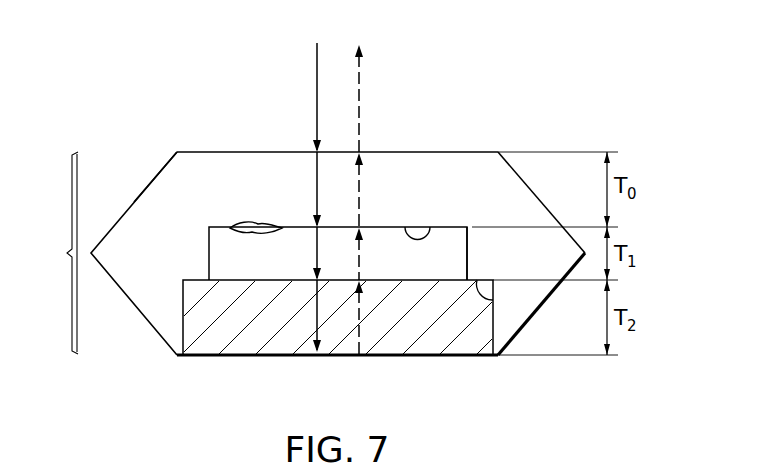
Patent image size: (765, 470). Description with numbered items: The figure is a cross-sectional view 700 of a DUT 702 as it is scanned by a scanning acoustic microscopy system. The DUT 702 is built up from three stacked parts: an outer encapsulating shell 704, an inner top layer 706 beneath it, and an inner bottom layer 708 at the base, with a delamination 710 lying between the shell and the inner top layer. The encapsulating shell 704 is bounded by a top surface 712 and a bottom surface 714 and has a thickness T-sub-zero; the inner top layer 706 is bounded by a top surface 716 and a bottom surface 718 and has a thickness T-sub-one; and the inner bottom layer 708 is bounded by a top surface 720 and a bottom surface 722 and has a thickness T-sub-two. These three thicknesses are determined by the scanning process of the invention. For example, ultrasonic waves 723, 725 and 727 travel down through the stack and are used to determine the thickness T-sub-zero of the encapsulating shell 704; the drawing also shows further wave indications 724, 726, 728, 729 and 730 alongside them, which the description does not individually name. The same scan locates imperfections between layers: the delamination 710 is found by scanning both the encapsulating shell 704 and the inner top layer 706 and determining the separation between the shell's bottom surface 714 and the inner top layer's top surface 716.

The cross-sectional view 700 is at (483, 88).
The DUT 702 is at (48, 253).
The encapsulating shell 704 is at (164, 152).
The inner top layer 706 is at (209, 262).
The inner bottom layer 708 is at (214, 348).
The delamination 710 is at (230, 228).
The top surface 712 is at (220, 152).
The bottom surface 714 is at (430, 226).
The top surface 716 is at (455, 226).
The bottom surface 718 is at (494, 305).
The top surface 720 is at (490, 279).
The bottom surface 722 is at (444, 357).
The ultrasonic wave 723 is at (317, 88).
The reflected beam 724 is at (360, 85).
The ultrasonic wave 725 is at (317, 162).
The reflected beam segment in upper portion 726 is at (362, 185).
The ultrasonic wave 727 is at (317, 233).
The reflected beam segment in intermediate layer 728 is at (362, 258).
The incident beam segment in substrate 729 is at (317, 306).
The reflected beam segment in substrate 730 is at (378, 346).